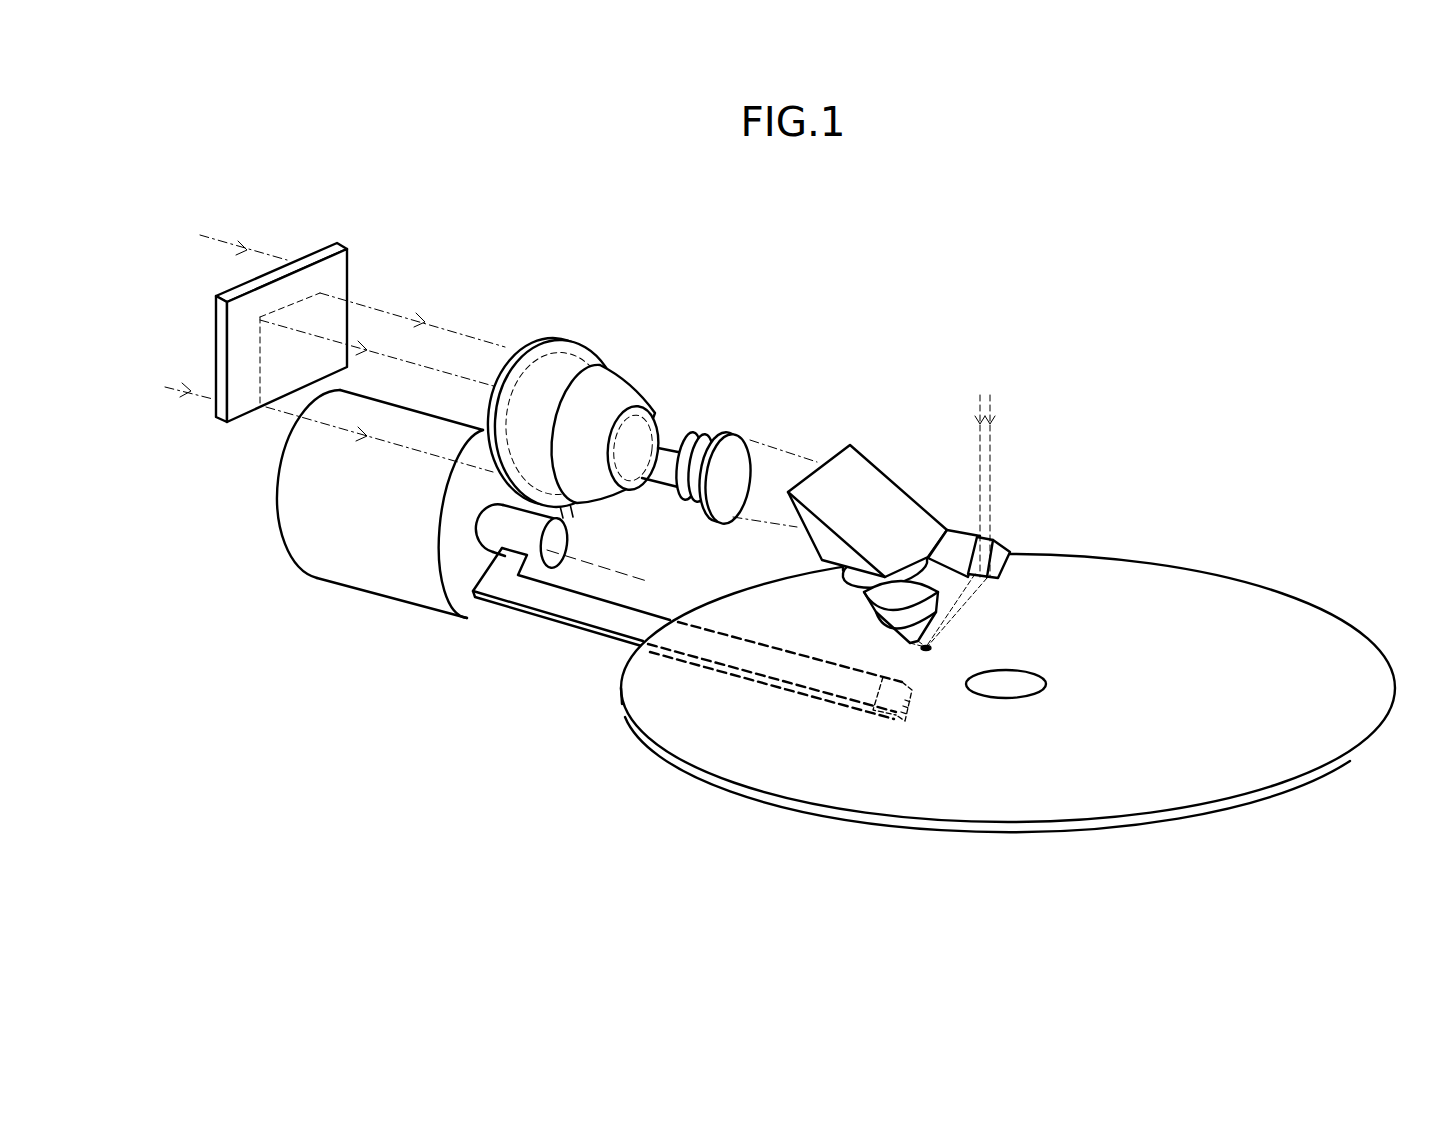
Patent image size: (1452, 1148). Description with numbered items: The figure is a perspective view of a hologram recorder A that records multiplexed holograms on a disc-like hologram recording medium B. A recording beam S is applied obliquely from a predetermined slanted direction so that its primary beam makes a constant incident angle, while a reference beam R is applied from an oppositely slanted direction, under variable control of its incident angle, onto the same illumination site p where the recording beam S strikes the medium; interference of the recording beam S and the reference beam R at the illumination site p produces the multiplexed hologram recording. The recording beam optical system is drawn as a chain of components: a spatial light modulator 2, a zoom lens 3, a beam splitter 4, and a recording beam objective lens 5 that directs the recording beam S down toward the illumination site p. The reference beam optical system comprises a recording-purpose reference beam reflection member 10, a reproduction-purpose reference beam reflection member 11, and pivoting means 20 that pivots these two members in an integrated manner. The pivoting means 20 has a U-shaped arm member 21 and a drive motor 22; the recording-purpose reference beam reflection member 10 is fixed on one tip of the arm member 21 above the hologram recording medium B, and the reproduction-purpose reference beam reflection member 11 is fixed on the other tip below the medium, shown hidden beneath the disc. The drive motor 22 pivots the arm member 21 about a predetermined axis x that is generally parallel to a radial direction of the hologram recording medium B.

The spatial light modulator 2 is at (320, 257).
The zoom lens 3 is at (707, 433).
The beam splitter 4 is at (877, 460).
The recording beam objective lens 5 is at (905, 640).
The recording-purpose reference beam reflection member 10 is at (1007, 543).
The reproduction-purpose reference beam reflection member 11 is at (876, 718).
The pivoting means 20 is at (388, 648).
The arm member 21 is at (590, 619).
The drive motor 22 is at (313, 580).
The recording beam S is at (478, 333).
The hologram recorder A is at (775, 300).
The hologram recording medium B is at (1260, 592).
The reference beam R is at (992, 443).
The illumination site p is at (940, 648).
The axis x is at (617, 570).